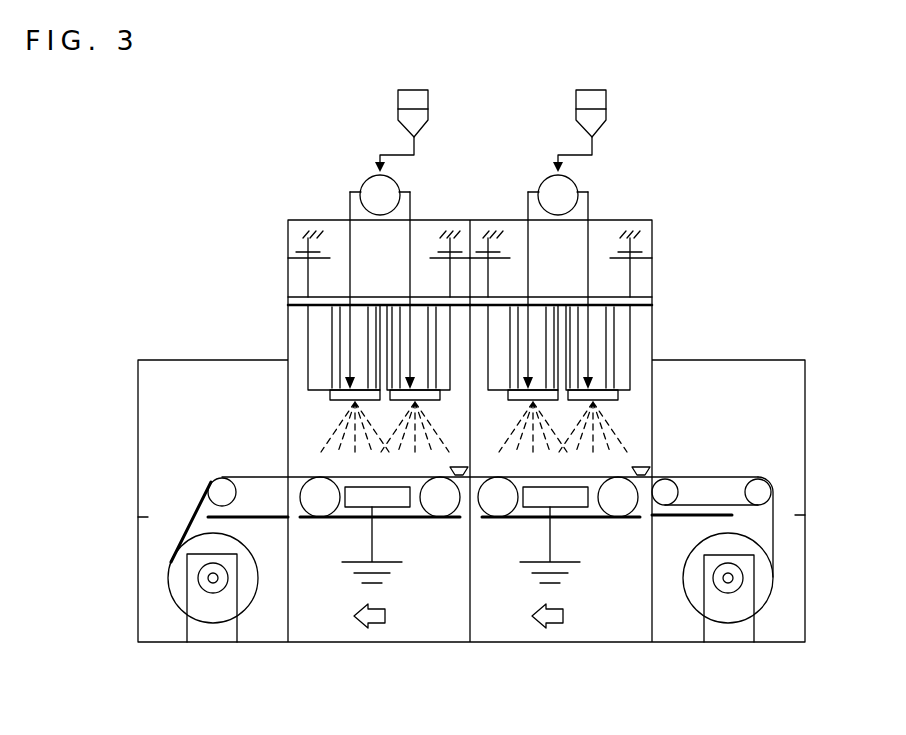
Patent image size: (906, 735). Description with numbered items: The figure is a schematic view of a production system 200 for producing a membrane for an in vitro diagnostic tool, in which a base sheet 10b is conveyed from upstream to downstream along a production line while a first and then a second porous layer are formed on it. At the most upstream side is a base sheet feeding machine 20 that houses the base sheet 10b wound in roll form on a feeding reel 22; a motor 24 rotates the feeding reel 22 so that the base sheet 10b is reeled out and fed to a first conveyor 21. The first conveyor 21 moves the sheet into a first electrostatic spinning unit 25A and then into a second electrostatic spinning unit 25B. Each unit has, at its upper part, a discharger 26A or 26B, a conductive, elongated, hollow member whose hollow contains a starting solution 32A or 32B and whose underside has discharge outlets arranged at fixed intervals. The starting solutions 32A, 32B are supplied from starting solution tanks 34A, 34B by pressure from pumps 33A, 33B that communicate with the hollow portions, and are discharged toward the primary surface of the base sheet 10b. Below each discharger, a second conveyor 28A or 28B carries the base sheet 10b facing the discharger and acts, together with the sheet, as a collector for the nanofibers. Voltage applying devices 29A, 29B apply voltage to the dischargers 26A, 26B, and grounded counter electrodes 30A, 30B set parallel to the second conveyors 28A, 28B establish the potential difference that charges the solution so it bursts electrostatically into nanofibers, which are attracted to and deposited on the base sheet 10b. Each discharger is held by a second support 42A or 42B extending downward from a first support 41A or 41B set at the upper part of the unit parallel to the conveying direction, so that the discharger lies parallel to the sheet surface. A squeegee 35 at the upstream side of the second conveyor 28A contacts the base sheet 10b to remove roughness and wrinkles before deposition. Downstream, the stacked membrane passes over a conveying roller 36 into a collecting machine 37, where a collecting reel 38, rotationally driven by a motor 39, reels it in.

The production system 200 is at (802, 166).
The base sheet feeding machine 20 is at (814, 608).
The base sheet 10b is at (722, 477).
The first conveyor 21 is at (702, 493).
The feeding reel 22 is at (692, 588).
The motor 24 is at (728, 633).
The first electrostatic spinning unit 25A is at (498, 650).
The second electrostatic spinning unit 25B is at (338, 650).
The discharger 26A is at (620, 398).
The discharger 26B is at (330, 397).
The second conveyor 28A is at (583, 517).
The second conveyor 28B is at (405, 517).
The voltage applying device 29A is at (488, 278).
The voltage applying device 29B is at (450, 278).
The counter electrode 30A is at (535, 500).
The counter electrode 30B is at (357, 500).
The starting solution 32A is at (594, 118).
The starting solution 32B is at (415, 118).
The pump 33A is at (574, 183).
The pump 33B is at (396, 183).
The starting solution tank 34A is at (606, 94).
The starting solution tank 34B is at (428, 94).
The squeegee 35 is at (645, 472).
The conveying roller 36 is at (225, 490).
The collecting machine 37 is at (157, 650).
The collecting reel 38 is at (178, 583).
The motor 39 is at (213, 630).
The first support 41A is at (652, 304).
The first support 41B is at (300, 304).
The second support 42A is at (612, 346).
The second support 42B is at (340, 346).